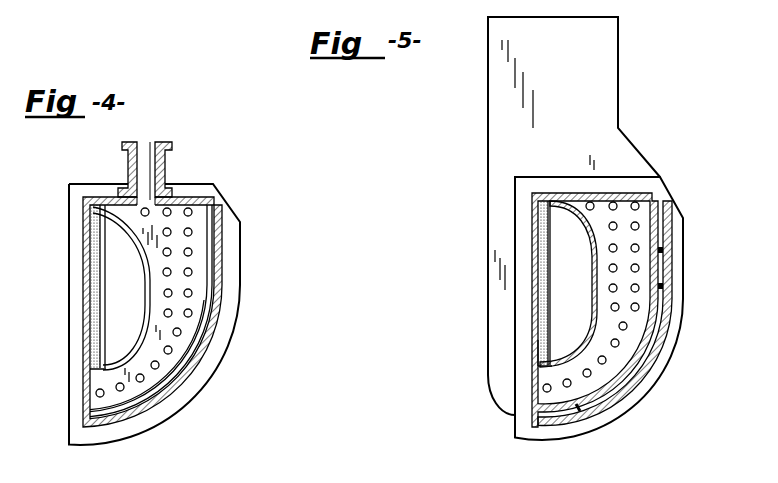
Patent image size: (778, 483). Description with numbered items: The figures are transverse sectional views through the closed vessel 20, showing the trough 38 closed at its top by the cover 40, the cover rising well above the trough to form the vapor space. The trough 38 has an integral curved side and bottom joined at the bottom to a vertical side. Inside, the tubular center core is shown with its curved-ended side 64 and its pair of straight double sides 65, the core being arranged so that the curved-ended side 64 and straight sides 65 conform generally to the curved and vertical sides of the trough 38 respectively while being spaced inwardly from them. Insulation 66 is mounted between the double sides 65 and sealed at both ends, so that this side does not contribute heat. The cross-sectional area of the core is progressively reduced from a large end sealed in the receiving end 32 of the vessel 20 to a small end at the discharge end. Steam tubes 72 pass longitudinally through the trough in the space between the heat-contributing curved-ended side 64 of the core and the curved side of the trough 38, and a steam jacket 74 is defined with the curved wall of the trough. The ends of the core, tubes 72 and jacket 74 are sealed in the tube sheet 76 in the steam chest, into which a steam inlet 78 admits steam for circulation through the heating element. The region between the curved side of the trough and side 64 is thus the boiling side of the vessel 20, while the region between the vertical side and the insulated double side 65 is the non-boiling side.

In FIG. 5, the closed vessel 20 is at (528, 143).
In FIG. 5, the receiving end 32 is at (583, 108).
In FIG. 5, the trough 38 is at (488, 330).
In FIG. 5, the cover 40 is at (488, 95).
In FIG. 4, the curved-ended side 64 is at (138, 243).
In FIG. 5, the curved-ended side 64 is at (582, 242).
In FIG. 5, the straight double sides 65 is at (548, 285).
In FIG. 4, the insulation 66 is at (95, 298).
In FIG. 5, the insulation 66 is at (533, 363).
In FIG. 4, the steam tubes 72 is at (158, 365).
In FIG. 5, the steam tubes 72 is at (604, 360).
In FIG. 4, the steam jacket 74 is at (213, 310).
In FIG. 5, the steam jacket 74 is at (660, 268).
In FIG. 4, the tube sheet 76 is at (192, 242).
In FIG. 4, the steam inlet 78 is at (148, 177).